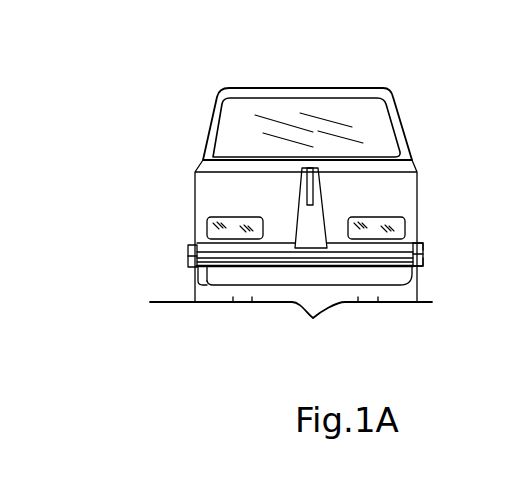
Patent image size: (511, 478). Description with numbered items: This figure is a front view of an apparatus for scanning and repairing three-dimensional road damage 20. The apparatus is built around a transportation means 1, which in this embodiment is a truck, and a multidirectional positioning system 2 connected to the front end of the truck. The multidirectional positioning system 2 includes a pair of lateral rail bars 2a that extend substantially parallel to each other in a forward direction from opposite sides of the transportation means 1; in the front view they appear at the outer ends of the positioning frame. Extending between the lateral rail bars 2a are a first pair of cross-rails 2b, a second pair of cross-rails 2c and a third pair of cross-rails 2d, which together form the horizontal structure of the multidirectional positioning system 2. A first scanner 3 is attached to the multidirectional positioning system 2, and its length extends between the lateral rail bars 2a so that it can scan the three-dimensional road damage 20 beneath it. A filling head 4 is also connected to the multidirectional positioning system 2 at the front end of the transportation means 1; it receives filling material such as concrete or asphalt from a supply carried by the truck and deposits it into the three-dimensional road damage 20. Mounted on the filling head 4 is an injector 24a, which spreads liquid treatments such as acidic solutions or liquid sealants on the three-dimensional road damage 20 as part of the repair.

The transportation means 1 is at (425, 78).
The multidirectional positioning system 2 is at (149, 273).
The lateral rail bars 2a is at (187, 253).
The first pair of cross-rails 2b is at (208, 275).
The second pair of cross-rails 2c is at (424, 260).
The third pair of cross-rails 2d is at (420, 244).
The first scanner 3 is at (305, 275).
The filling head 4 is at (301, 201).
The three-dimensional road damage 20 is at (313, 318).
The injector 24a is at (318, 182).